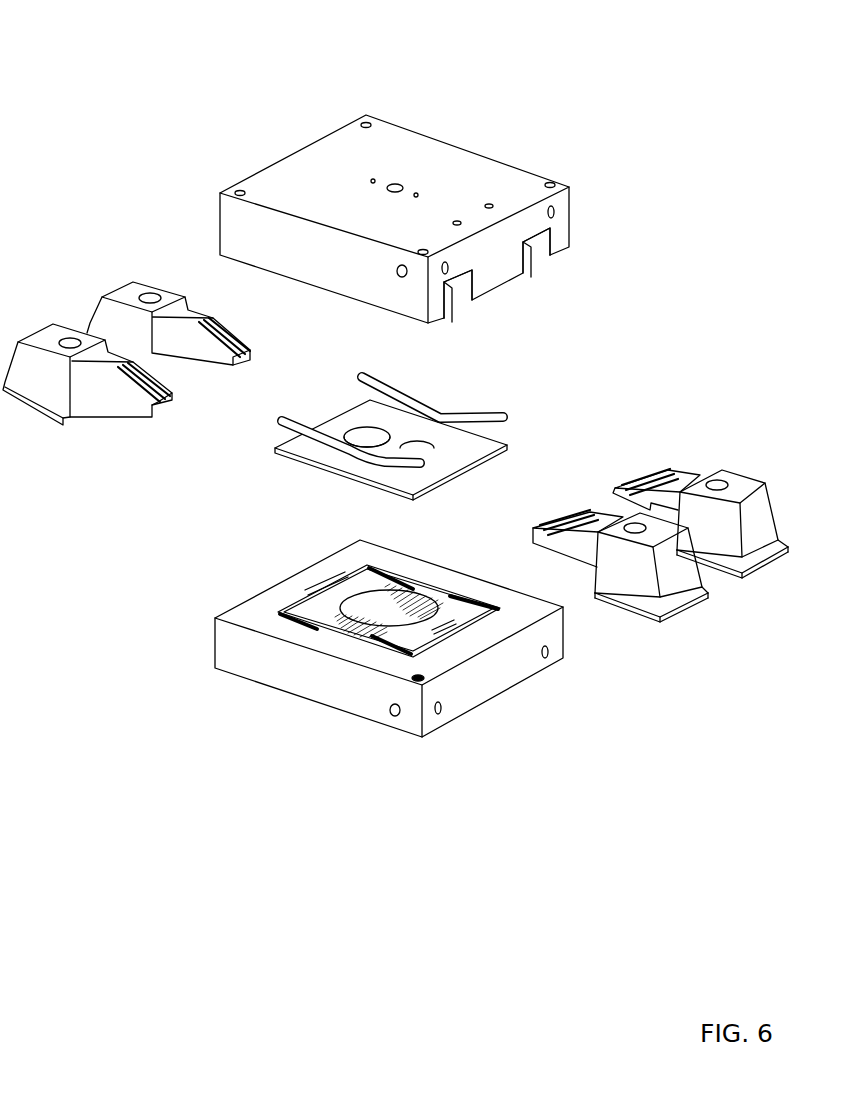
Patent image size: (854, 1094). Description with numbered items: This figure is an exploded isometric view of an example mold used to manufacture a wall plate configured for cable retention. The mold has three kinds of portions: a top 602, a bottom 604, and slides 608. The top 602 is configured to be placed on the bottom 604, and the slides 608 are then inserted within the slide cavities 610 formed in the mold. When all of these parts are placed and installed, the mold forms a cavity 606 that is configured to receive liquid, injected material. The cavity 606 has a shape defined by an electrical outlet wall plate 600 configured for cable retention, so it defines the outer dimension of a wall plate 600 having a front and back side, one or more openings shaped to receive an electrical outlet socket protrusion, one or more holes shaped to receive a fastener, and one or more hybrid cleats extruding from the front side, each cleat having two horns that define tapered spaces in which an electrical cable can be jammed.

The electrical outlet wall plate 600 is at (298, 467).
The top 602 is at (310, 170).
The bottom 604 is at (287, 672).
The cavity 606 is at (440, 643).
The slides 608 is at (55, 323).
The slide cavities 610 is at (458, 298).